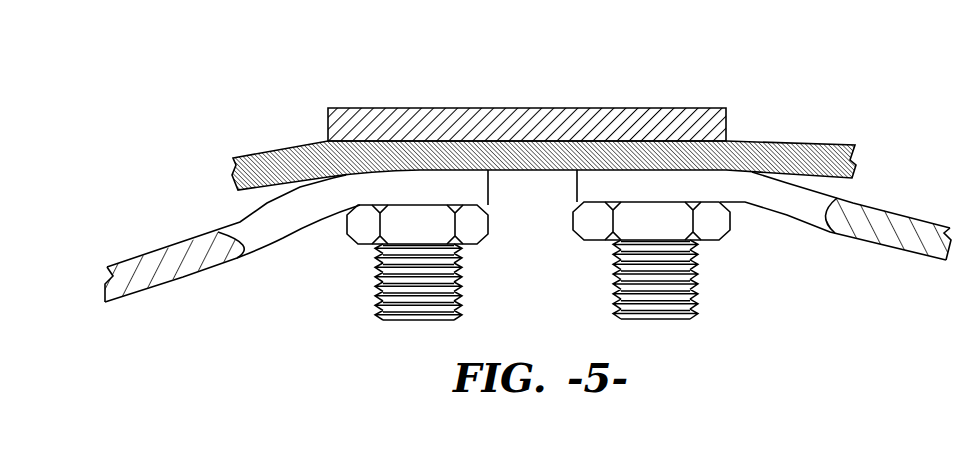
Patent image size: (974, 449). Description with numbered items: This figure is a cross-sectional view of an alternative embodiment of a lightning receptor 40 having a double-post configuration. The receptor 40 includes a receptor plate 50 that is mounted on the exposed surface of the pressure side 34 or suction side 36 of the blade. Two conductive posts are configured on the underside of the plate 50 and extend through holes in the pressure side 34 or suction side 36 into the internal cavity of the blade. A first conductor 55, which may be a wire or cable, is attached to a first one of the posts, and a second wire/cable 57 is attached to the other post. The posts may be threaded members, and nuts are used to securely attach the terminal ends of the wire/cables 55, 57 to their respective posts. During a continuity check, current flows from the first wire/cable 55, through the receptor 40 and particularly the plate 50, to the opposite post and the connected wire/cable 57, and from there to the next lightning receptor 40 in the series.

The lightning receptor 40 is at (528, 194).
The receptor plate 50 is at (352, 106).
The pressure side 34 is at (585, 153).
The suction side 36 is at (828, 143).
The first conductor 55 is at (283, 238).
The second wire/cable 57 is at (792, 222).